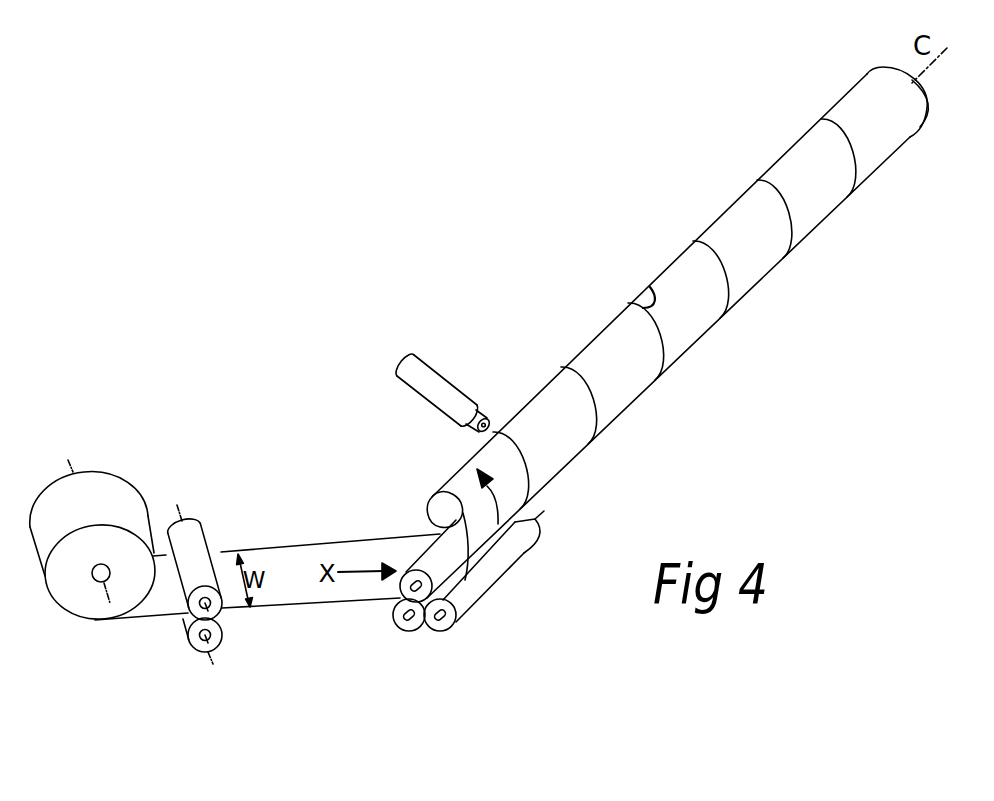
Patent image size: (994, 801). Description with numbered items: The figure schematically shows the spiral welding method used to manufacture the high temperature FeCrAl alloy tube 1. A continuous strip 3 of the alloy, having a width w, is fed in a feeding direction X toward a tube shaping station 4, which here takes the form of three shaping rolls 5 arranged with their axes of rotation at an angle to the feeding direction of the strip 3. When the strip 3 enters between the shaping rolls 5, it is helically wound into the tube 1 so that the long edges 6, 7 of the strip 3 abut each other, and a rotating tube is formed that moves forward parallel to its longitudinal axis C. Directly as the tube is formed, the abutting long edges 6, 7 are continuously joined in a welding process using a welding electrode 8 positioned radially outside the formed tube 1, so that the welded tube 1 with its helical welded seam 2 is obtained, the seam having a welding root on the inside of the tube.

The tube 1 is at (757, 145).
The helical welded seam 2 is at (650, 287).
The continuous strip 3 is at (350, 589).
The tube shaping station 4 is at (468, 621).
The shaping rolls 5 is at (415, 625).
The long edge 6 is at (301, 609).
The long edge 7 is at (283, 548).
The welding electrode 8 is at (482, 416).